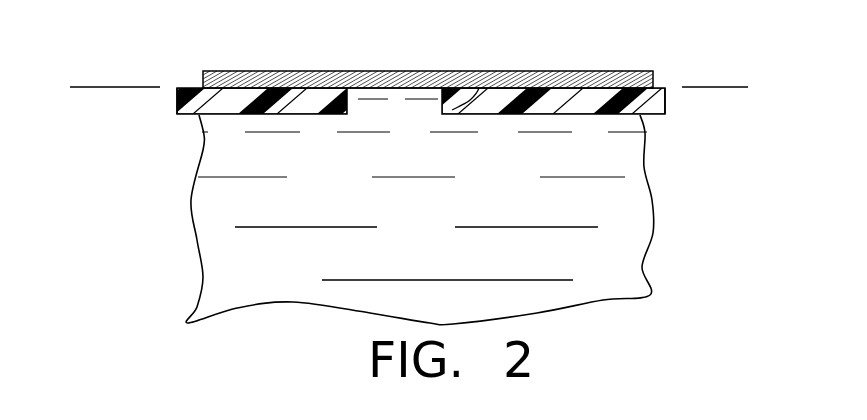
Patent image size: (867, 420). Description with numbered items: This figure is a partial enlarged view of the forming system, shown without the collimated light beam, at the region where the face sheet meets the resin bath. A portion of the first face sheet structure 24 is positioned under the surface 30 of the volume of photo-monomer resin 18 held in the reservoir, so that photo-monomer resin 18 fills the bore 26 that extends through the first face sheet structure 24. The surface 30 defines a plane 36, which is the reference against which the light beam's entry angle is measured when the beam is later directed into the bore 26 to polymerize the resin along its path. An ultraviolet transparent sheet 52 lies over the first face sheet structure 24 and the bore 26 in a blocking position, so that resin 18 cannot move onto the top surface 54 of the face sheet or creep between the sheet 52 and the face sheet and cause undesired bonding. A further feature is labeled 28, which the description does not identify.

The photo-monomer resin 18 is at (593, 209).
The first face sheet structure 24 is at (598, 95).
The bore 26 is at (479, 88).
The second portion of first layer 28 is at (368, 93).
The surface 30 is at (416, 92).
The plane 36 is at (104, 87).
The ultraviolet transparent sheet 52 is at (225, 71).
The top surface 54 is at (178, 88).